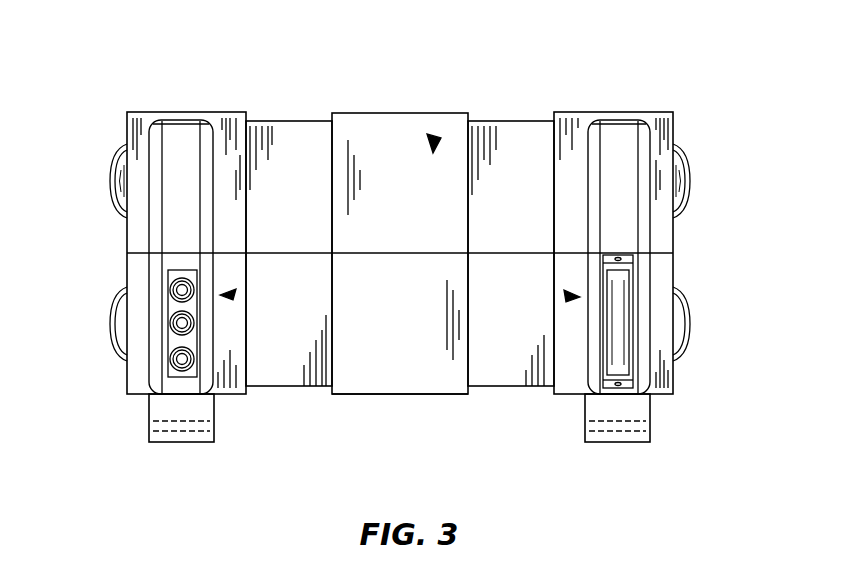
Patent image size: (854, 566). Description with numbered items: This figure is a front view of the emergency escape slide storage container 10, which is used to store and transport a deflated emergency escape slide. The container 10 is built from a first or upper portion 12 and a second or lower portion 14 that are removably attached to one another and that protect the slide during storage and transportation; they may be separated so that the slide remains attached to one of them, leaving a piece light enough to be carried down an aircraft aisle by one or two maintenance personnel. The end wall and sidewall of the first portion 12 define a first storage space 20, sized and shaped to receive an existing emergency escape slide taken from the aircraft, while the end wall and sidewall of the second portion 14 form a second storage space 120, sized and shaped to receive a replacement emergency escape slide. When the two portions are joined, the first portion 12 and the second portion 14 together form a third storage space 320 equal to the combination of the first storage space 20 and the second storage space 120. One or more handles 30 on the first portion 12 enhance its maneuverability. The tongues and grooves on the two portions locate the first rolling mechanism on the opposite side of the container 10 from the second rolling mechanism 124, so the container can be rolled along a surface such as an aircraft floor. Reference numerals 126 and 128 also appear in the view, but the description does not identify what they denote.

The emergency escape slide storage container 10 is at (140, 68).
The first or upper portion 12 is at (357, 121).
The second or lower portion 14 is at (356, 382).
The first storage space 20 is at (527, 160).
The handles 30 is at (112, 183).
The second storage space 120 is at (504, 347).
The second rolling mechanism 124 is at (230, 296).
The connector ports 126 is at (180, 322).
The slot 128 is at (617, 302).
The third storage space 320 is at (433, 135).